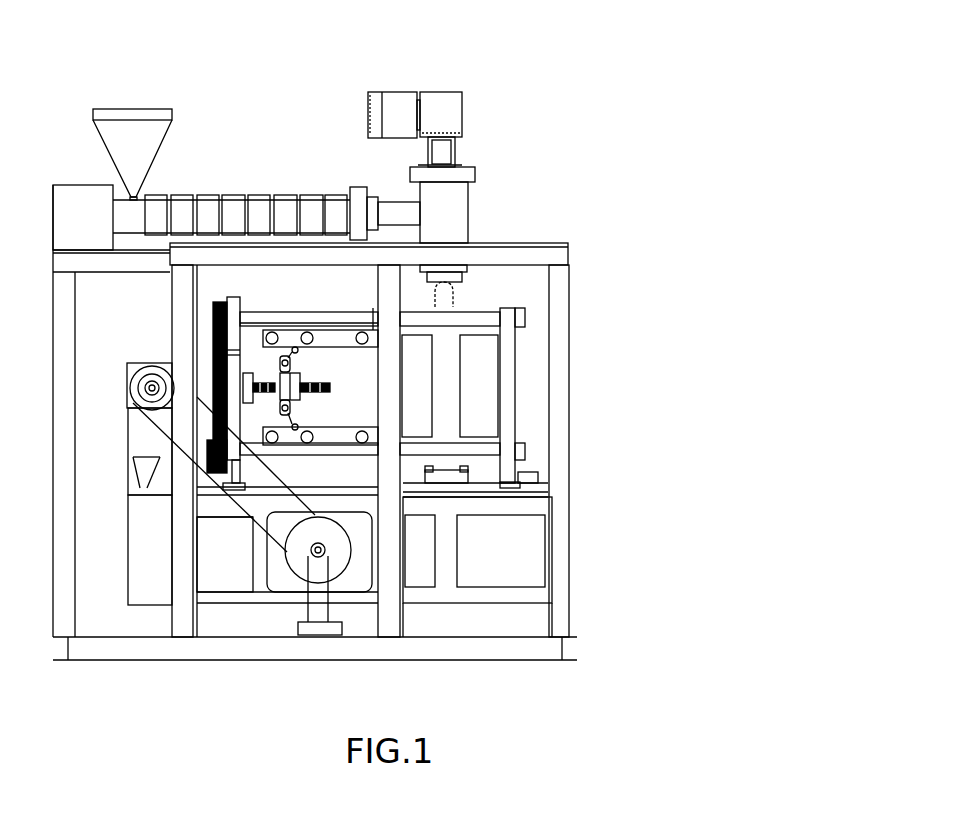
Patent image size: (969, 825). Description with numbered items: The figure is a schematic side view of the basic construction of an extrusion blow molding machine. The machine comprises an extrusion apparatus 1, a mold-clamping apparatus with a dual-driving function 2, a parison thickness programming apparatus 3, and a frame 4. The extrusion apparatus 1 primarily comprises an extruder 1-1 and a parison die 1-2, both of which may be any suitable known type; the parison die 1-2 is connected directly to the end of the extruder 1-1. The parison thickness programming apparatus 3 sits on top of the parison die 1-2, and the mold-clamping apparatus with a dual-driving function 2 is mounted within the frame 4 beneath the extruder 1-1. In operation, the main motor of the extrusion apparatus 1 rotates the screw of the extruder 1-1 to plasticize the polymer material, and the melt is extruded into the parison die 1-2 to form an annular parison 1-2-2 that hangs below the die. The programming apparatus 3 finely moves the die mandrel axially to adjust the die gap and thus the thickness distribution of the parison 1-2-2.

The extrusion apparatus 1 is at (353, 162).
The extruder 1-1 is at (185, 212).
The parison die 1-2 is at (445, 215).
The annular parison 1-2-2 is at (443, 300).
The mold-clamping apparatus with a dual-driving function 2 is at (268, 308).
The parison thickness programming apparatus 3 is at (498, 112).
The frame 4 is at (562, 362).